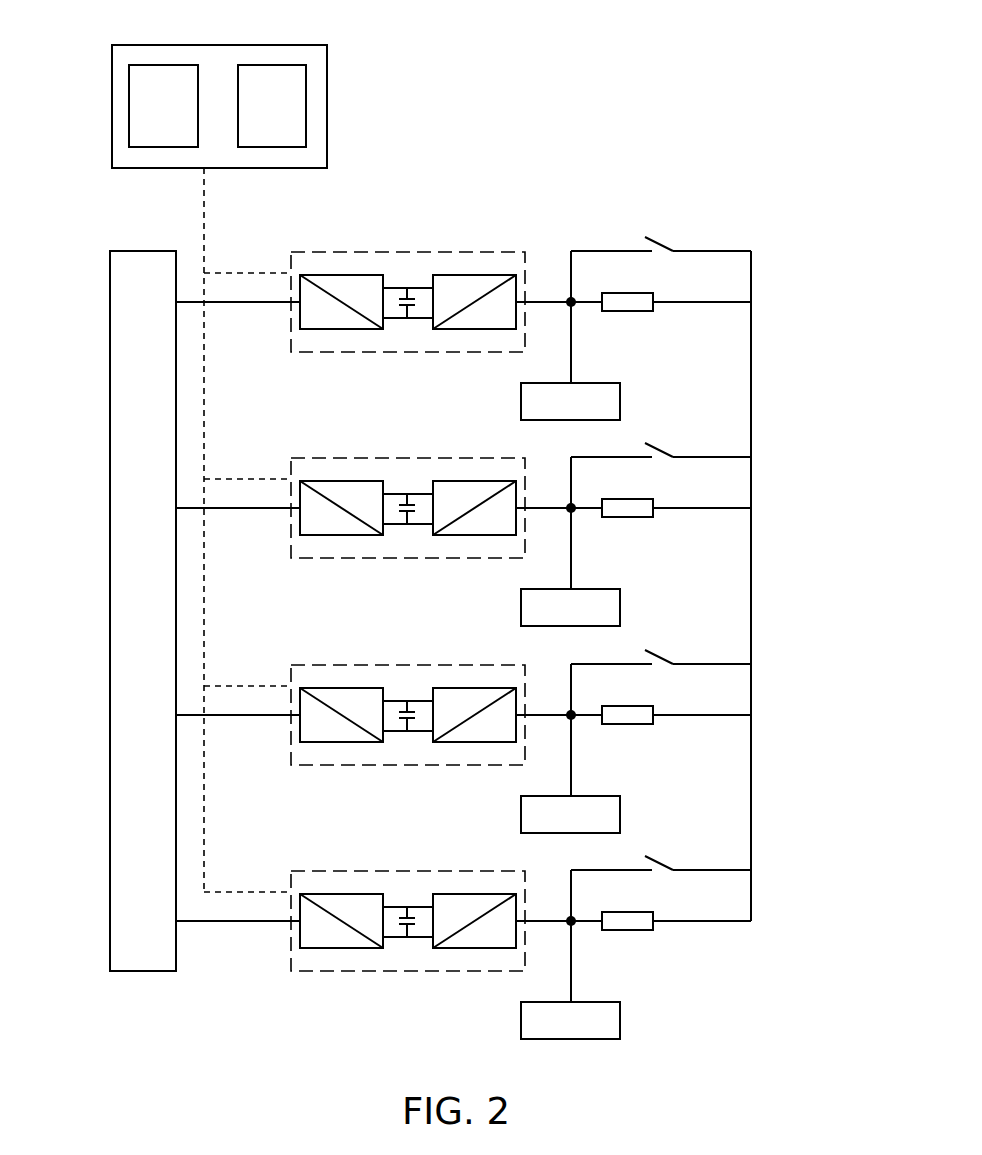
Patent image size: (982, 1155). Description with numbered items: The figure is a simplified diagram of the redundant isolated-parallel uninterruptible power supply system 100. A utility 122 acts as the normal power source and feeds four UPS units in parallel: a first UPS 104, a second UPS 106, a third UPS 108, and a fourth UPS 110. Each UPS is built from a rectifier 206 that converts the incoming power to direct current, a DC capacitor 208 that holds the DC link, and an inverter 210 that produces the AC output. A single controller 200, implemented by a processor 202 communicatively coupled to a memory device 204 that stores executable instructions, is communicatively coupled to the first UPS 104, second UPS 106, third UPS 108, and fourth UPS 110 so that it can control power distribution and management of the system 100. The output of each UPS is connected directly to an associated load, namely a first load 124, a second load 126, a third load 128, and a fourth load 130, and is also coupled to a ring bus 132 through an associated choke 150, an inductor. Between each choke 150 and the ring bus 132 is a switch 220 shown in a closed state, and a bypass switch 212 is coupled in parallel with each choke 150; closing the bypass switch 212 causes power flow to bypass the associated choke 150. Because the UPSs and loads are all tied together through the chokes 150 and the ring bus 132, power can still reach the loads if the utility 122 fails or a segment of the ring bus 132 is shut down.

The redundant isolated-parallel uninterruptible power supply system 100 is at (588, 102).
The first UPS 104 is at (370, 247).
The second UPS 106 is at (370, 453).
The third UPS 108 is at (370, 660).
The fourth UPS 110 is at (370, 866).
The utility 122 is at (110, 463).
The first load 124 is at (521, 399).
The second load 126 is at (521, 605).
The third load 128 is at (521, 812).
The fourth load 130 is at (620, 1019).
The ring bus 132 is at (751, 395).
The choke 150 is at (640, 312).
The controller 200 is at (327, 106).
The processor 202 is at (163, 65).
The memory device 204 is at (272, 65).
The rectifier 206 is at (320, 949).
The DC capacitor 208 is at (407, 938).
The inverter 210 is at (470, 949).
The bypass switch 212 is at (661, 245).
The output line 220 is at (713, 304).